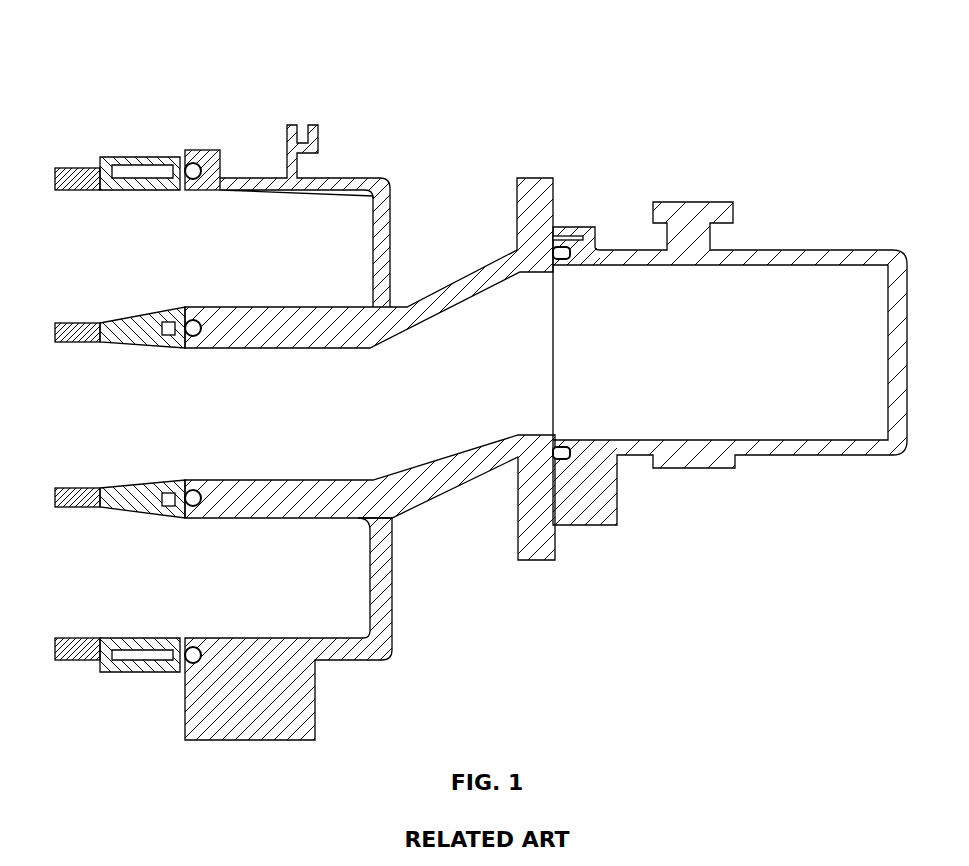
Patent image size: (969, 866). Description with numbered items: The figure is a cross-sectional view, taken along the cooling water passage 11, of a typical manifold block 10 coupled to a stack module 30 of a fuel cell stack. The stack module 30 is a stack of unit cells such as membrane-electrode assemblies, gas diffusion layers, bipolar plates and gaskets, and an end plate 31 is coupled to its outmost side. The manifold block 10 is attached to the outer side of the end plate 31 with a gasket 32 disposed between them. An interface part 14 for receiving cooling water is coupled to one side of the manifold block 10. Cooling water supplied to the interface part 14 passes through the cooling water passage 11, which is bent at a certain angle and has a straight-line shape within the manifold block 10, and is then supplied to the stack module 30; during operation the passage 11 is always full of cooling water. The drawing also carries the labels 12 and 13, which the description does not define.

The manifold block 10 is at (380, 177).
The cooling water passage 11 is at (462, 335).
The end wall of outer tube 12 is at (343, 232).
The housing 13 is at (358, 573).
The interface part 14 is at (798, 248).
The stack module 30 is at (80, 168).
The end plate 31 is at (132, 155).
The gasket 32 is at (200, 150).